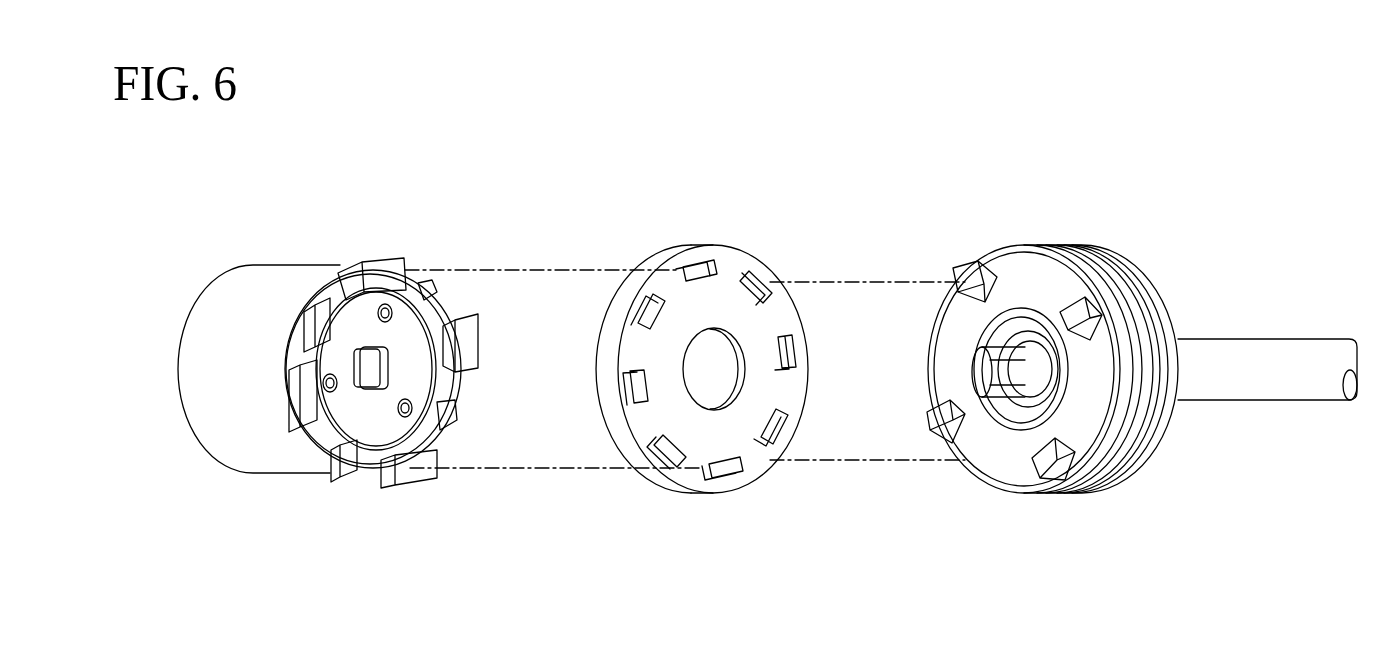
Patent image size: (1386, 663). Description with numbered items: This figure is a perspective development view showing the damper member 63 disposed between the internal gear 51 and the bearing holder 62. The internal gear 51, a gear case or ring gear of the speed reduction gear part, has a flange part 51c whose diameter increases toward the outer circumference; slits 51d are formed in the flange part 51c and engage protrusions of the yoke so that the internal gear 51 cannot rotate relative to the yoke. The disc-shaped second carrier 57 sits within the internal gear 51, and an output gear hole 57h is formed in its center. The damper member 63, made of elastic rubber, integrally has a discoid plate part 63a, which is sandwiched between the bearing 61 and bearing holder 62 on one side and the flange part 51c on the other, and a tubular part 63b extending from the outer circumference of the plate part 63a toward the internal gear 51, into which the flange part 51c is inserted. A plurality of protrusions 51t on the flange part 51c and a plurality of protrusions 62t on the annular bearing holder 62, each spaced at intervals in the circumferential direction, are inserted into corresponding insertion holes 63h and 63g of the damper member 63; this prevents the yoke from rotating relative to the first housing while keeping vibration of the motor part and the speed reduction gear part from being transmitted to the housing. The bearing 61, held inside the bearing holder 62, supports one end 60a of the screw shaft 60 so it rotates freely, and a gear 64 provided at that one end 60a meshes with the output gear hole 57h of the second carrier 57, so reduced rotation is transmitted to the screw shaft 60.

The internal gear 51 is at (287, 275).
The flange part 51c is at (352, 257).
The protrusions 51t is at (380, 262).
The slits 51d is at (432, 286).
The second carrier 57 is at (363, 413).
The output gear hole 57h is at (390, 372).
The damper member 63 is at (693, 240).
The plate part 63a is at (668, 388).
The tubular part 63b is at (596, 370).
The insertion holes 63g is at (645, 300).
The insertion holes 63h is at (708, 262).
The bearing holder 62 is at (1082, 482).
The protrusions 62t is at (980, 280).
The bearing 61 is at (1040, 318).
The gear 64 is at (982, 372).
The screw shaft 60 is at (1278, 338).
The one end of the screw shaft 60a is at (1052, 374).